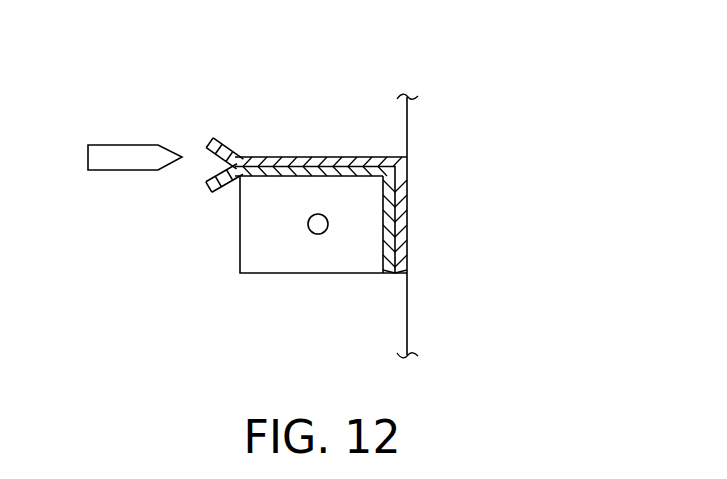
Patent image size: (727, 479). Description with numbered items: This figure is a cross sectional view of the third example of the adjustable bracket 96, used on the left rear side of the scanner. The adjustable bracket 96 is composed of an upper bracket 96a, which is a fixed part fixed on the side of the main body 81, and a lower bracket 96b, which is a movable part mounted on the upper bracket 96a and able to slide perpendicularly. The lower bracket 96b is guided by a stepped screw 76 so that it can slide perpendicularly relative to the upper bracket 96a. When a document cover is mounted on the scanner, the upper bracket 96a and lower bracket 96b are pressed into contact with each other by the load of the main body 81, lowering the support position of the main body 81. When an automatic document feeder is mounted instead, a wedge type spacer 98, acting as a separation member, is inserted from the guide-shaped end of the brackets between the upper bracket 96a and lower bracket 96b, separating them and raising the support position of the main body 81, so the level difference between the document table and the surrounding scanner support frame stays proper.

The wedge type spacer 98 is at (118, 145).
The adjustable bracket 96 is at (296, 105).
The upper bracket 96a is at (231, 146).
The lower bracket 96b is at (228, 192).
The main body 81 is at (406, 120).
The stepped screw 76 is at (318, 234).